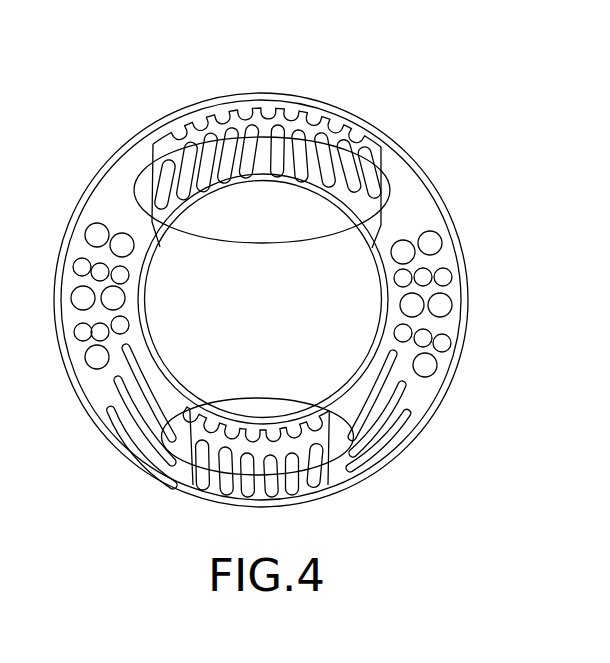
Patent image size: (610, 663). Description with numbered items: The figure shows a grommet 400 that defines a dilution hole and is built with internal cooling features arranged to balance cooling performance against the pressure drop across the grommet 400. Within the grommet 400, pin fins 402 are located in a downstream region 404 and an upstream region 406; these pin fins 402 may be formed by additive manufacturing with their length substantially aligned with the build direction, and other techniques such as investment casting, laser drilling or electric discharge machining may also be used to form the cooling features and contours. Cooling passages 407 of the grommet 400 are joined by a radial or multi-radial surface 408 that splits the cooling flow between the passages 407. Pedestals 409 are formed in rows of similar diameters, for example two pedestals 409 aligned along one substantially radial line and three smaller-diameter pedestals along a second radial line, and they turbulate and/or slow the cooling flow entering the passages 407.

The grommet 400 is at (468, 88).
The pin fins 402 is at (257, 438).
The downstream region 404 is at (297, 401).
The upstream region 406 is at (333, 146).
The passages 407 is at (396, 416).
The radial or multi-radial surface 408 is at (400, 386).
The pedestals 409 is at (433, 239).